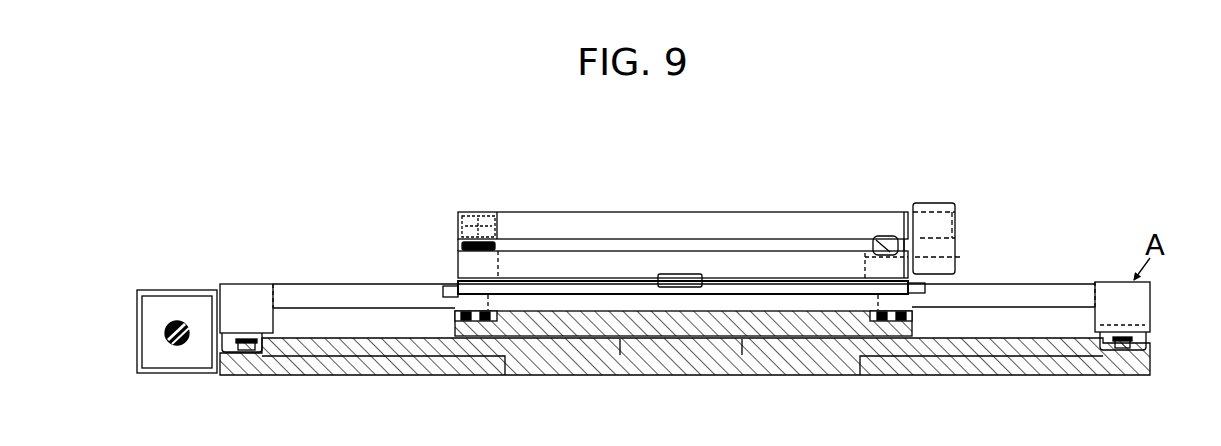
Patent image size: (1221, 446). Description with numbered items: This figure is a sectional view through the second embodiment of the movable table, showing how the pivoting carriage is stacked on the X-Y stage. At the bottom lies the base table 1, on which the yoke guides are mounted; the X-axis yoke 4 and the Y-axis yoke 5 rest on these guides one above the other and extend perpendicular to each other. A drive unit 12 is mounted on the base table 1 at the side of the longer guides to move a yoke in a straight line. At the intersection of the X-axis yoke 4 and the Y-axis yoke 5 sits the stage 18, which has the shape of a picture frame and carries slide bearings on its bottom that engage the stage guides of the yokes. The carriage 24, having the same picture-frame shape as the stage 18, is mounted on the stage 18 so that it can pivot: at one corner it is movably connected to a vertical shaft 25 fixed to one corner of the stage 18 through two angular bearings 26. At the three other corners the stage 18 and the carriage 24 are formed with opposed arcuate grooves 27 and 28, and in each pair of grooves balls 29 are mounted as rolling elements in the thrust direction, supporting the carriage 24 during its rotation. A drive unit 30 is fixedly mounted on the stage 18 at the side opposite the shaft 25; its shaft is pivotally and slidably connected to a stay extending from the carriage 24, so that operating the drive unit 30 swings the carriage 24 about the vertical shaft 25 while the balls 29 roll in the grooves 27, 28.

The base table 1 is at (828, 353).
The X-axis yoke 4 is at (690, 327).
The Y-axis yoke 5 is at (340, 296).
The drive unit 12 is at (136, 306).
The stage 18 is at (603, 262).
The carriage 24 is at (600, 220).
The vertical shaft 25 is at (480, 240).
The angular bearings 26 is at (462, 246).
The arcuate groove 27 is at (872, 237).
The arcuate groove 28 is at (960, 257).
The balls 29 is at (897, 237).
The drive unit 30 is at (952, 204).